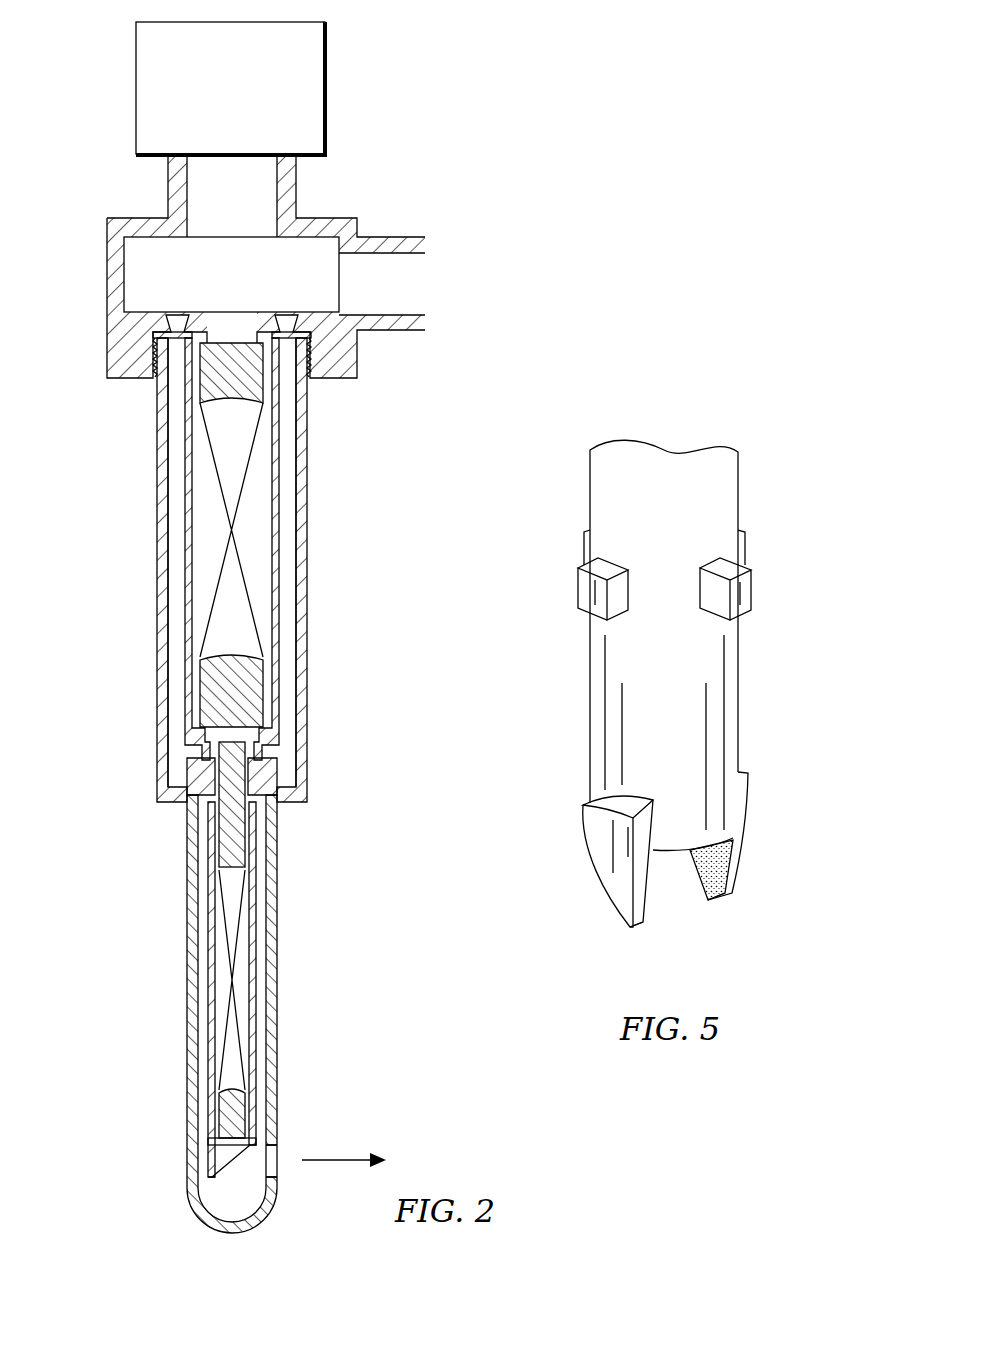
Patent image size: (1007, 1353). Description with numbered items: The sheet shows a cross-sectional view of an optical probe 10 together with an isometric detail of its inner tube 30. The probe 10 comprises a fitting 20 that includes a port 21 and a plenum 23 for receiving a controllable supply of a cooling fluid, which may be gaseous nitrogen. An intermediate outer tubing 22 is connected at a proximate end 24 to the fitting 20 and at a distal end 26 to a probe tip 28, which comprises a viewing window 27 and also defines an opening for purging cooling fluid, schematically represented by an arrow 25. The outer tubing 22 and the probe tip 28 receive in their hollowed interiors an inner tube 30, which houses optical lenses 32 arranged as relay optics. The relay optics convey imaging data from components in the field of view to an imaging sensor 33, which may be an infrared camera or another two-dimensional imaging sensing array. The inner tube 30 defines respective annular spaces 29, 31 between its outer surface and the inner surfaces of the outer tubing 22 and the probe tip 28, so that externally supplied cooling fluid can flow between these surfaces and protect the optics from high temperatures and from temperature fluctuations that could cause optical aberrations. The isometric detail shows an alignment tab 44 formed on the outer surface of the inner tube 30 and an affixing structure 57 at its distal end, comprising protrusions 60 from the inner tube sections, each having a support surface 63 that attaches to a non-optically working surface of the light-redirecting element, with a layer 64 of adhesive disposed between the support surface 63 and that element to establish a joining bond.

In FIG. 2, the optical probe 10 is at (364, 433).
In FIG. 2, the fitting 20 is at (108, 327).
In FIG. 2, the port 21 is at (426, 283).
In FIG. 2, the intermediate outer tubing 22 is at (157, 500).
In FIG. 2, the plenum 23 is at (145, 270).
In FIG. 2, the proximate end 24 is at (250, 266).
In FIG. 2, the arrow 25 is at (333, 1160).
In FIG. 2, the distal end 26 is at (133, 776).
In FIG. 2, the viewing window 27 is at (277, 1167).
In FIG. 2, the probe tip 28 is at (187, 914).
In FIG. 2, the annular space 29 is at (178, 658).
In FIG. 2, the inner tube 30 is at (185, 560).
In FIG. 2, the annular space 31 is at (205, 968).
In FIG. 2, the optical lenses 32 is at (260, 625).
In FIG. 2, the imaging sensor 33 is at (328, 86).
In FIG. 5, the alignment tab 44 is at (752, 583).
In FIG. 5, the affixing structure 57 is at (600, 893).
In FIG. 5, the protrusions 60 is at (761, 855).
In FIG. 5, the support surface 63 is at (720, 867).
In FIG. 5, the layer of adhesive 64 is at (708, 900).